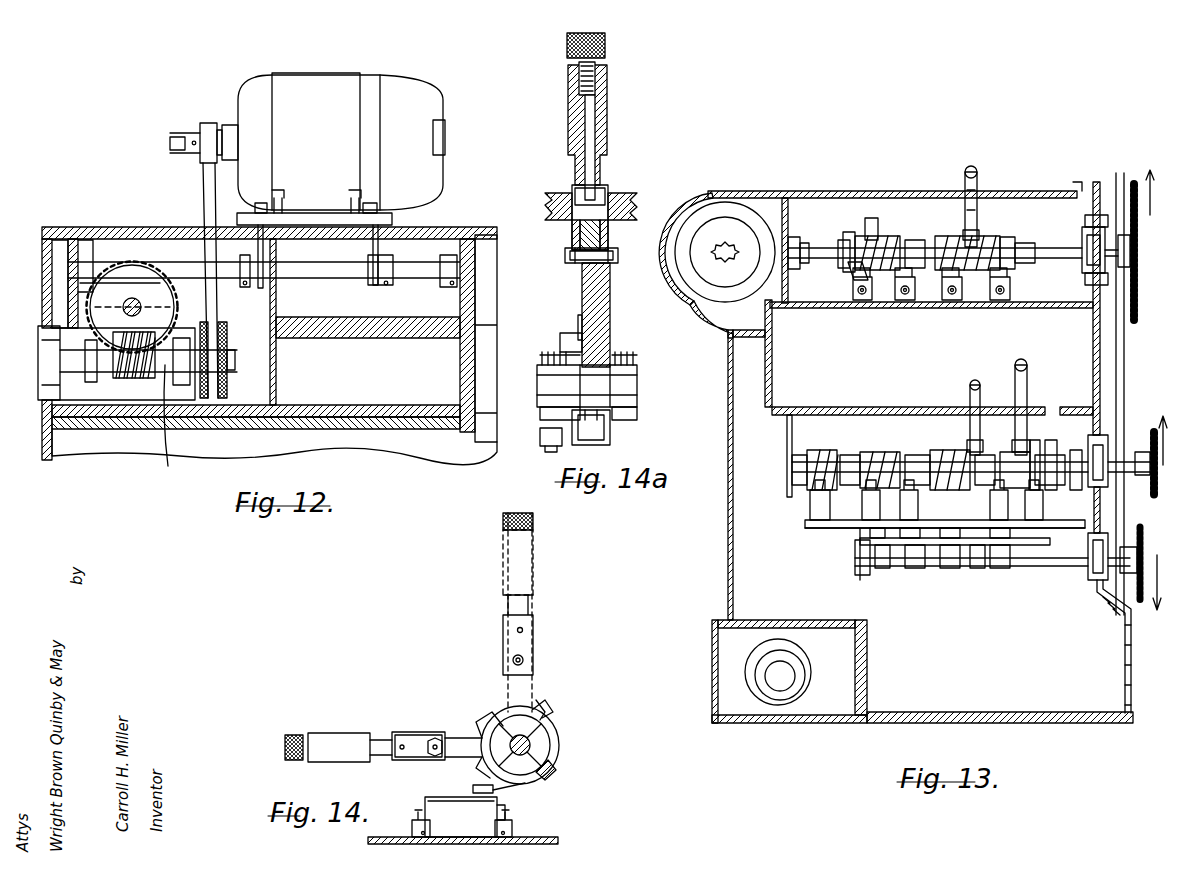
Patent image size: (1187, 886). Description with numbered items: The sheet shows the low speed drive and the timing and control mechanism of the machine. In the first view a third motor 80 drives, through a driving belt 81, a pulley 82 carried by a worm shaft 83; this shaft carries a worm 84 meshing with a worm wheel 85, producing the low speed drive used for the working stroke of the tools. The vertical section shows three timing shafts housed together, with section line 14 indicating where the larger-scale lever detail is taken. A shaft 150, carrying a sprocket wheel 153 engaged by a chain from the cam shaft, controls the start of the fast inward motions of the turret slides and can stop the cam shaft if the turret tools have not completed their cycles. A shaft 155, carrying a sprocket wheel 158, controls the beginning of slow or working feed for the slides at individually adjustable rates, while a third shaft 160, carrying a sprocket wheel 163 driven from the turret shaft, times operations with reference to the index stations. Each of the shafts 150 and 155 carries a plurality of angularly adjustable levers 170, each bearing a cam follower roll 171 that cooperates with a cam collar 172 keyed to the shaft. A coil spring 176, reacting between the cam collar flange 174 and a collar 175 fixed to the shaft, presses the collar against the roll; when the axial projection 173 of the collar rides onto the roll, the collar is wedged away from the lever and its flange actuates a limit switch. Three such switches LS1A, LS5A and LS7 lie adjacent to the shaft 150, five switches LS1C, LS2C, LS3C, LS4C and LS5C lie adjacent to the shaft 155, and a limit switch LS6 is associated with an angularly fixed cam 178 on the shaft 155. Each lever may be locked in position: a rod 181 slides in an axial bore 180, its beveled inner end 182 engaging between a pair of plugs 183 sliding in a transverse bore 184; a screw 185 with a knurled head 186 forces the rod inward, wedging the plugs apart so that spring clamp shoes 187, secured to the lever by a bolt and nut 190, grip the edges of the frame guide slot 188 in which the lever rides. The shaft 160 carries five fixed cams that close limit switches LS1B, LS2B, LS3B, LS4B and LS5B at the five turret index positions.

In FIG. 12, the third motor 80 is at (333, 75).
In FIG. 12, the driving belt 81 is at (219, 312).
In FIG. 12, the pulley 82 is at (228, 390).
In FIG. 12, the worm shaft 83 is at (167, 425).
In FIG. 12, the worm 84 is at (116, 372).
In FIG. 12, the worm wheel 85 is at (128, 262).
In FIG. 13, the section line 14— 14 is at (875, 215).
In FIG. 13, the shaft 150 is at (1052, 250).
In FIG. 13, the sprocket wheel 153 is at (1138, 290).
In FIG. 13, the shaft 155 is at (1110, 455).
In FIG. 13, the sprocket wheel 158 is at (1140, 528).
In FIG. 13, the third shaft 160 is at (1005, 570).
In FIG. 13, the sprocket wheel 163 is at (1118, 606).
In FIG. 14A, the lever 170 is at (603, 310).
In FIG. 14, the lever 170 is at (360, 738).
In FIG. 13, the lever 170 is at (965, 180).
In FIG. 14A, the cam follower roll 171 is at (610, 432).
In FIG. 14, the cam follower roll 171 is at (550, 770).
In FIG. 14A, the cam collar 172 is at (562, 338).
In FIG. 13, the cam collar 172 is at (870, 220).
In FIG. 14A, the axial projection 173 is at (578, 322).
In FIG. 14A, the cam collar flange 174 is at (560, 448).
In FIG. 14, the cam collar flange 174 is at (538, 780).
In FIG. 13, the collar 175 is at (850, 238).
In FIG. 14A, the coil spring 176 is at (545, 358).
In FIG. 13, the coil spring 176 is at (852, 272).
In FIG. 13, the angularly fixed cam 178 is at (1060, 470).
In FIG. 14A, the axial bore 180 is at (582, 118).
In FIG. 14A, the rod 181 is at (596, 138).
In FIG. 14A, the beveled inner end 182 is at (602, 185).
In FIG. 14A, the plugs 183 is at (580, 182).
In FIG. 14A, the transverse bore 184 is at (638, 212).
In FIG. 14A, the screw 185 is at (598, 75).
In FIG. 14A, the knurled head 186 is at (568, 55).
In FIG. 14, the knurled head 186 is at (294, 735).
In FIG. 14A, the spring clamp shoes 187 is at (572, 238).
In FIG. 14, the spring clamp shoes 187 is at (425, 735).
In FIG. 14A, the frame guide slot 188 is at (547, 207).
In FIG. 14A, the bolt and nut 190 is at (580, 258).
In FIG. 14, the bolt and nut 190 is at (425, 760).
In FIG. 13, the limit switch LS1A is at (855, 300).
In FIG. 13, the limit switch LS5A is at (922, 300).
In FIG. 13, the limit switch LS7 is at (966, 303).
In FIG. 13, the limit switch LS6 is at (1060, 500).
In FIG. 13, the limit switch LS1C is at (812, 515).
In FIG. 13, the limit switch LS2C is at (868, 518).
In FIG. 13, the limit switch LS3C is at (908, 455).
In FIG. 13, the limit switch LS4C is at (953, 455).
In FIG. 13, the limit switch LS5C is at (1000, 455).
In FIG. 13, the limit switch LS1B is at (888, 568).
In FIG. 13, the limit switch LS2B is at (918, 568).
In FIG. 13, the limit switch LS3B is at (950, 570).
In FIG. 13, the limit switch LS4B is at (977, 570).
In FIG. 13, the limit switch LS5B is at (1000, 570).